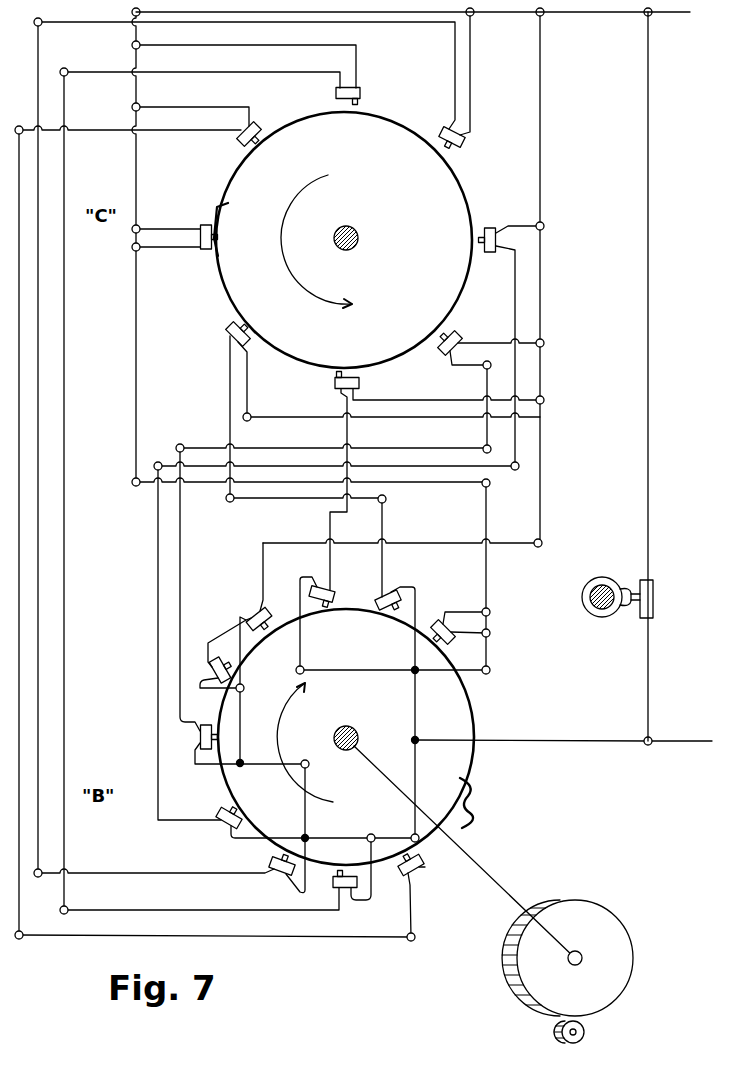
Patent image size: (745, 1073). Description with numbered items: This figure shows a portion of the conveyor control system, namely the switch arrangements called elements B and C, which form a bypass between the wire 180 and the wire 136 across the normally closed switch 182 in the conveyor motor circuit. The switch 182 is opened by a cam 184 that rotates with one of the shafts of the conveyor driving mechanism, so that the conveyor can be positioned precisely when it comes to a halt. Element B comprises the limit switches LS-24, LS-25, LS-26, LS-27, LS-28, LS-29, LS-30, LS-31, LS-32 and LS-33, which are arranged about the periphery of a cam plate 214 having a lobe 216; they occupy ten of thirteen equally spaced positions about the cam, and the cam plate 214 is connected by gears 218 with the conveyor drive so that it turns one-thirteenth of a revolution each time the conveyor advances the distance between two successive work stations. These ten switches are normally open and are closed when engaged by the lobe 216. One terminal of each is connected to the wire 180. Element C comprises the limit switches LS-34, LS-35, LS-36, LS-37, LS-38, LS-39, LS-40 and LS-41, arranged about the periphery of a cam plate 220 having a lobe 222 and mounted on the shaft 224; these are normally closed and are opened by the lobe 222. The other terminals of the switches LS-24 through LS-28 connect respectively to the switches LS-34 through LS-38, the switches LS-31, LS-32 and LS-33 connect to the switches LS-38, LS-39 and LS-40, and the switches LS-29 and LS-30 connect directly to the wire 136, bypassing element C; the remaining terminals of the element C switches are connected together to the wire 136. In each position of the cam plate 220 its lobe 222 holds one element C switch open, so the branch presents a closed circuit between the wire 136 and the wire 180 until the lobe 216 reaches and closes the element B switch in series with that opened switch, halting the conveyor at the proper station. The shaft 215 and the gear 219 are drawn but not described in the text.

The wire 180 is at (668, 17).
The wire 136 is at (648, 540).
The normally closed switch 182 is at (655, 597).
The cam 184 is at (600, 618).
The cam plate 220 is at (450, 193).
The lobe 222 is at (228, 260).
The shaft 224 is at (358, 242).
The cam plate 214 is at (466, 716).
The drive shaft 215 is at (357, 734).
The lobe 216 is at (470, 810).
The gears 218 is at (617, 935).
The pinion gear 219 is at (548, 1034).
The limit switch LS-24 is at (425, 868).
The limit switch LS-25 is at (336, 880).
The limit switch LS-26 is at (255, 862).
The limit switch LS-27 is at (236, 838).
The limit switch LS-28 is at (198, 742).
The limit switch LS-29 is at (210, 663).
The limit switch LS-30 is at (254, 609).
The limit switch LS-31 is at (323, 592).
The limit switch LS-32 is at (386, 602).
The limit switch LS-33 is at (452, 645).
The limit switch LS-34 is at (241, 127).
The limit switch LS-35 is at (392, 104).
The limit switch LS-36 is at (464, 132).
The limit switch LS-37 is at (497, 255).
The limit switch LS-38 is at (444, 358).
The limit switch LS-39 is at (335, 385).
The limit switch LS-40 is at (229, 348).
The limit switch LS-41 is at (206, 250).